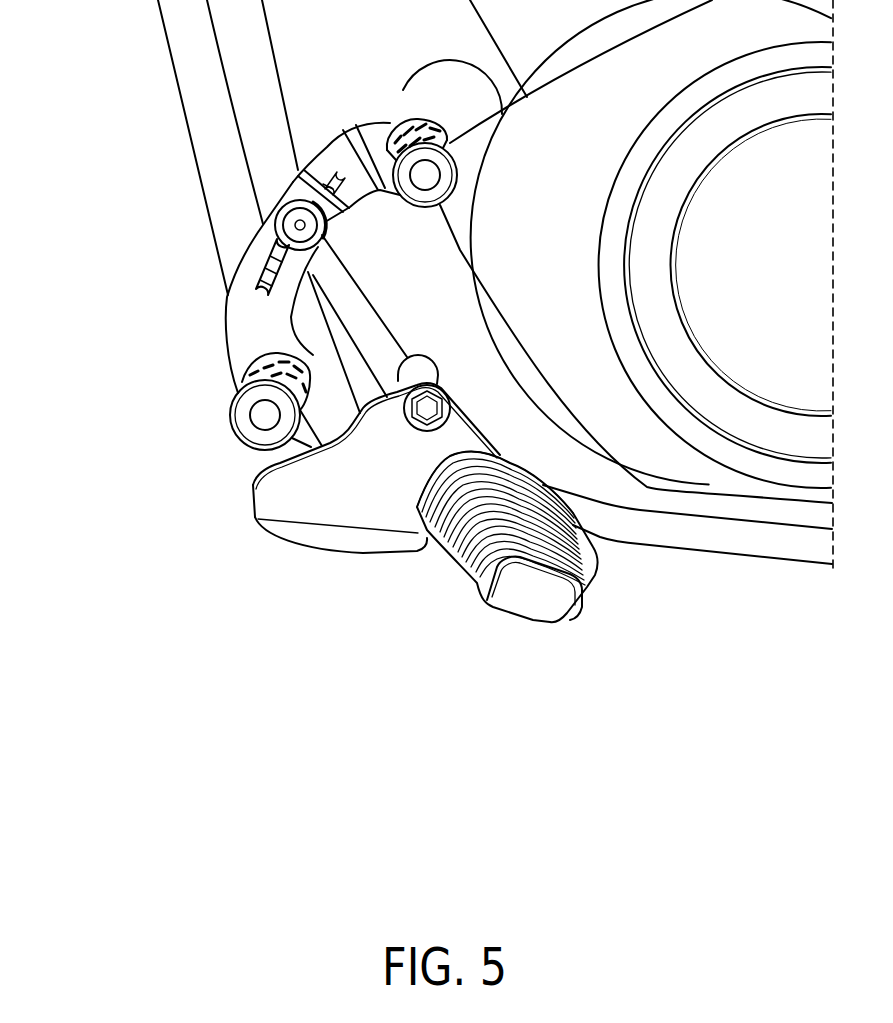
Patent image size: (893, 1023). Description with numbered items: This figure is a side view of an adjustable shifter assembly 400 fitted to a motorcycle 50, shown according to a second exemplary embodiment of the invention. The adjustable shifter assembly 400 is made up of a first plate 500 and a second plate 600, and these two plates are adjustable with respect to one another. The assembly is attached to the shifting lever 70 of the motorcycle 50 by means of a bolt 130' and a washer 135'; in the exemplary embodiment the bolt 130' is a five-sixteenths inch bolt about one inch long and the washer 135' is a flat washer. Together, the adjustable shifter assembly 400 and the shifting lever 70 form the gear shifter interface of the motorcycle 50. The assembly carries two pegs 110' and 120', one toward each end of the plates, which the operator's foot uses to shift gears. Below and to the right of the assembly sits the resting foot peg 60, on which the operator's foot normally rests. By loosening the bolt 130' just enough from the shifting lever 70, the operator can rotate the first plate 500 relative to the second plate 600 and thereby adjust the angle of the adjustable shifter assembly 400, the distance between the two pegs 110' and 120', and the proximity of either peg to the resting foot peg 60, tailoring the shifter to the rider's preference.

The motorcycle 50 is at (166, 131).
The resting foot peg 60 is at (557, 603).
The shifting lever 70 is at (367, 332).
The peg 110' is at (222, 411).
The peg 120' is at (470, 163).
The bolt 130' is at (223, 251).
The washer 135' is at (231, 220).
The adjustable shifter assembly 400 is at (293, 239).
The first plate 500 is at (247, 332).
The second plate 600 is at (372, 127).